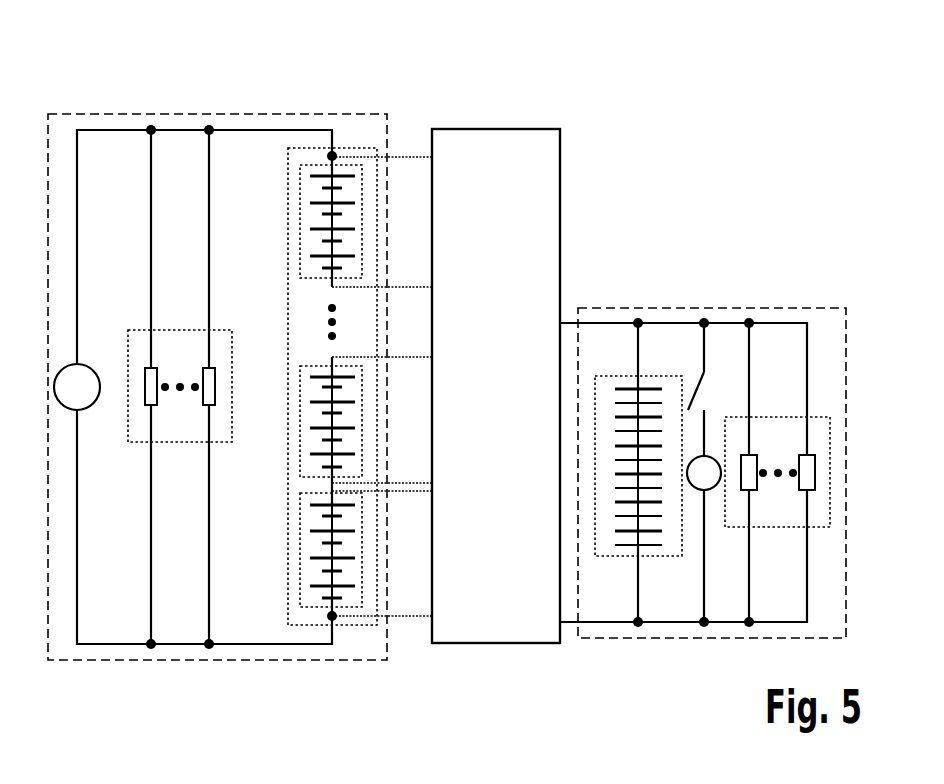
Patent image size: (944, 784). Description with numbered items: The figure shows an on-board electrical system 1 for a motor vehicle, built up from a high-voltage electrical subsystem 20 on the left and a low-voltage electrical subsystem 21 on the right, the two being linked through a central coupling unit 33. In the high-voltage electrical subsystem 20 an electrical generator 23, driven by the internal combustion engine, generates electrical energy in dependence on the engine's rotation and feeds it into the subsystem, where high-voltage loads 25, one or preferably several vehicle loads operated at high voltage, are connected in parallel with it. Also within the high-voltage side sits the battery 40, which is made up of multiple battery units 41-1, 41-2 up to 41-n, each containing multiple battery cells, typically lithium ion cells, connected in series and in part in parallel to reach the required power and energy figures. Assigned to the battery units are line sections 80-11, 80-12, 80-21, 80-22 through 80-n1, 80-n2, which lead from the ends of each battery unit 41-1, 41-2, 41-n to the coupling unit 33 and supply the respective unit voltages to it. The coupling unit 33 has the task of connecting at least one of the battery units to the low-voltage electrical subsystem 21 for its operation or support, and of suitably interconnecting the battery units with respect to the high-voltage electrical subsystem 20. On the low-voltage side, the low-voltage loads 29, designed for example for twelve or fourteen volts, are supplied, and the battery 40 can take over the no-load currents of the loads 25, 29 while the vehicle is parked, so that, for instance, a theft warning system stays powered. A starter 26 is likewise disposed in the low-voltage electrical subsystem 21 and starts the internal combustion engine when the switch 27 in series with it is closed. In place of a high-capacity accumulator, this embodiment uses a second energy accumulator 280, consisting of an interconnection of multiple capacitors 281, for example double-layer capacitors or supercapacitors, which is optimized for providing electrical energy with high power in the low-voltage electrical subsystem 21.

The on-board electrical system 1 is at (773, 113).
The high-voltage electrical subsystem 20 is at (216, 113).
The low-voltage electrical subsystem 21 is at (712, 308).
The electrical generator 23 is at (95, 404).
The high-voltage loads 25 is at (180, 330).
The starter 26 is at (710, 490).
The switch 27 is at (698, 392).
The low-voltage loads 29 is at (777, 416).
The coupling unit 33 is at (495, 128).
The battery 40 is at (353, 147).
The battery unit 41-n is at (300, 218).
The battery unit 41-2 is at (300, 455).
The battery unit 41-1 is at (300, 540).
The line section 80-n2 is at (432, 158).
The line section 80-n1 is at (432, 287).
The line section 80-22 is at (432, 338).
The line section 80-21 is at (432, 465).
The line section 80-12 is at (432, 507).
The line section 80-11 is at (432, 598).
The second energy accumulator 280 is at (610, 375).
The capacitors 281 is at (651, 388).